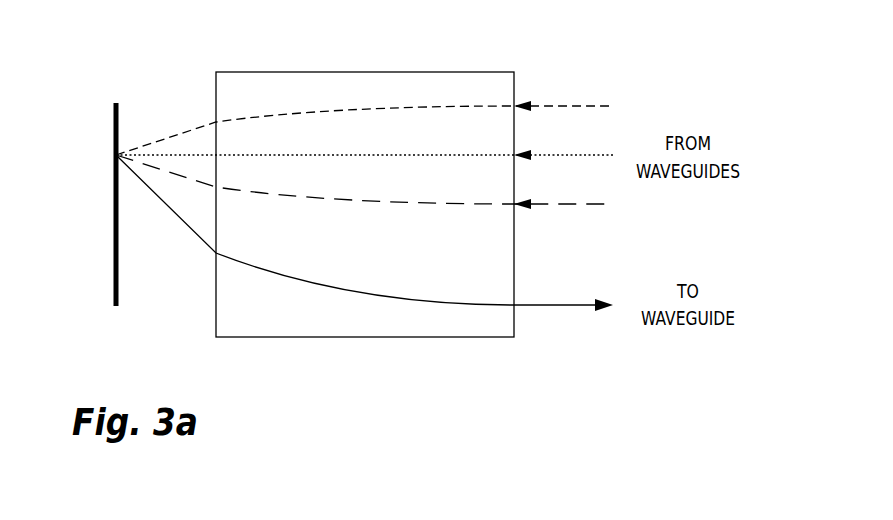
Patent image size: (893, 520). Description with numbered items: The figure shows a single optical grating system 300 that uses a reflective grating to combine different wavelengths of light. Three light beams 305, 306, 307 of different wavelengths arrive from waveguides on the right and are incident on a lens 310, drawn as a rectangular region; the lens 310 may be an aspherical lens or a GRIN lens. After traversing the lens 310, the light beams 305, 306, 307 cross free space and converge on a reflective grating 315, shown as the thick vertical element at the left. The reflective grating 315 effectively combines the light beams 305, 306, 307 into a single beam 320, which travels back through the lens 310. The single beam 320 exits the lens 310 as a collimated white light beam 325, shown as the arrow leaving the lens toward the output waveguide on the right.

The single optical grating system 300 is at (126, 56).
The light beam 305 is at (545, 106).
The light beam 306 is at (545, 156).
The light beam 307 is at (545, 205).
The lens 310 is at (465, 71).
The reflective grating 315 is at (114, 120).
The single beam 320 is at (187, 232).
The collimated white light beam 325 is at (582, 302).